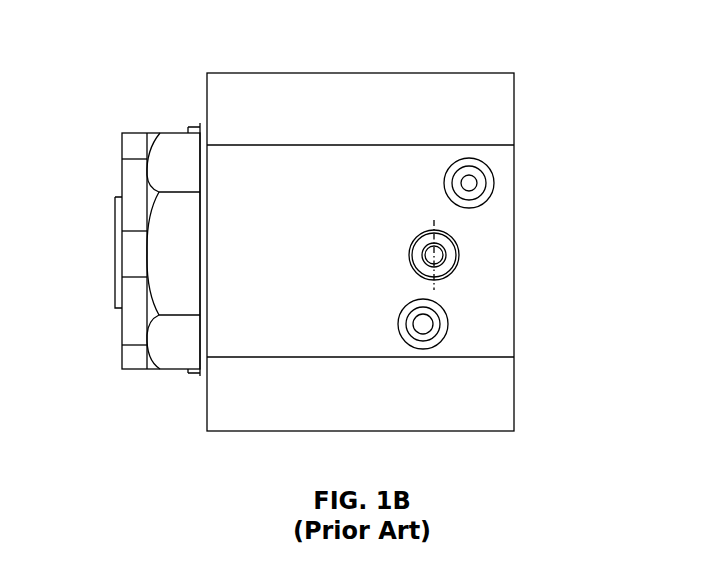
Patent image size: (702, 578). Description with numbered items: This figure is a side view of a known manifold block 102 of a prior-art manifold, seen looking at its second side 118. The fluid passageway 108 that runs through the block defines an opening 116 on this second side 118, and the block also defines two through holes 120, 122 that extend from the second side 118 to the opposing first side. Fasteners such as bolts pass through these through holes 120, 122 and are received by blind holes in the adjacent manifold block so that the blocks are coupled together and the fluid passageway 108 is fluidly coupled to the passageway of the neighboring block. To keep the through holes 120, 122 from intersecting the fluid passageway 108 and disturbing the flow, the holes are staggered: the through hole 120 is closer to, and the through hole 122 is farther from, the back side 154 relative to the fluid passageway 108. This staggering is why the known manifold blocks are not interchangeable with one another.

The manifold block 102 is at (121, 49).
The back side 154 is at (514, 170).
The second side 118 is at (328, 200).
The opening 116 is at (419, 218).
The through hole 120 is at (469, 183).
The fluid passageway 108 is at (440, 255).
The through hole 122 is at (423, 325).